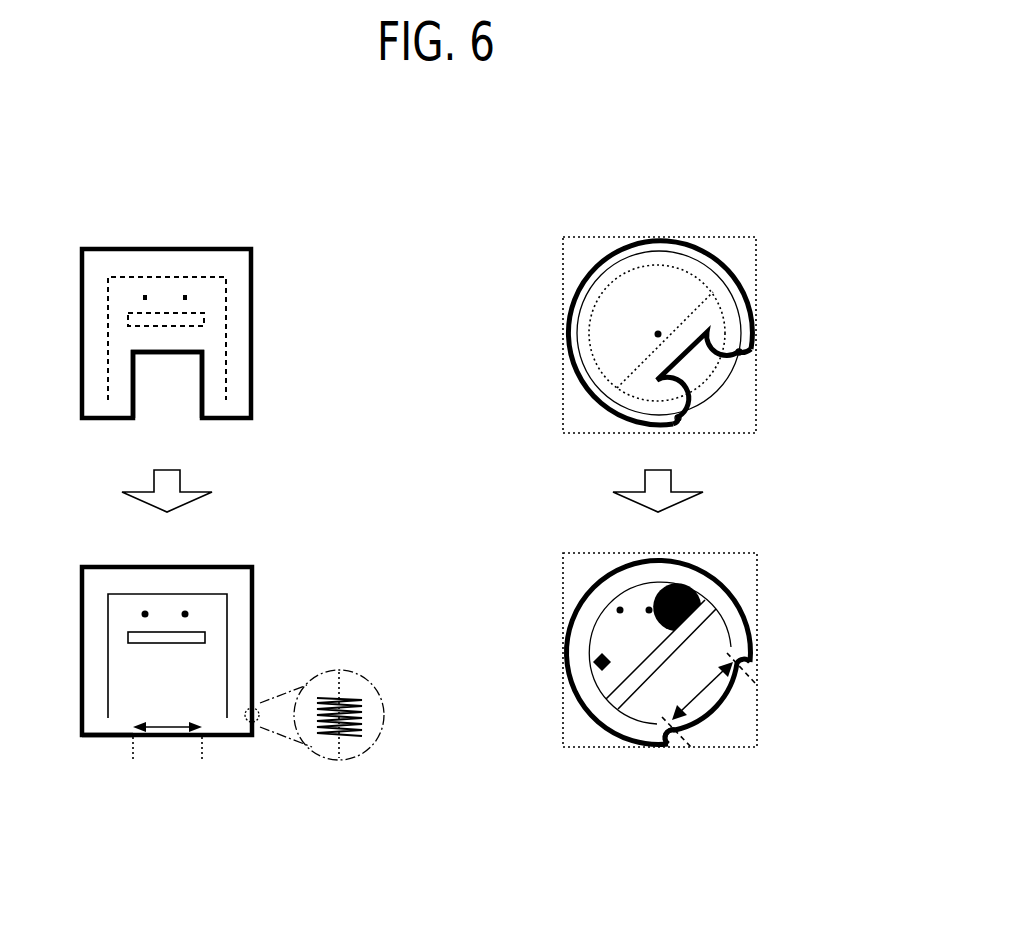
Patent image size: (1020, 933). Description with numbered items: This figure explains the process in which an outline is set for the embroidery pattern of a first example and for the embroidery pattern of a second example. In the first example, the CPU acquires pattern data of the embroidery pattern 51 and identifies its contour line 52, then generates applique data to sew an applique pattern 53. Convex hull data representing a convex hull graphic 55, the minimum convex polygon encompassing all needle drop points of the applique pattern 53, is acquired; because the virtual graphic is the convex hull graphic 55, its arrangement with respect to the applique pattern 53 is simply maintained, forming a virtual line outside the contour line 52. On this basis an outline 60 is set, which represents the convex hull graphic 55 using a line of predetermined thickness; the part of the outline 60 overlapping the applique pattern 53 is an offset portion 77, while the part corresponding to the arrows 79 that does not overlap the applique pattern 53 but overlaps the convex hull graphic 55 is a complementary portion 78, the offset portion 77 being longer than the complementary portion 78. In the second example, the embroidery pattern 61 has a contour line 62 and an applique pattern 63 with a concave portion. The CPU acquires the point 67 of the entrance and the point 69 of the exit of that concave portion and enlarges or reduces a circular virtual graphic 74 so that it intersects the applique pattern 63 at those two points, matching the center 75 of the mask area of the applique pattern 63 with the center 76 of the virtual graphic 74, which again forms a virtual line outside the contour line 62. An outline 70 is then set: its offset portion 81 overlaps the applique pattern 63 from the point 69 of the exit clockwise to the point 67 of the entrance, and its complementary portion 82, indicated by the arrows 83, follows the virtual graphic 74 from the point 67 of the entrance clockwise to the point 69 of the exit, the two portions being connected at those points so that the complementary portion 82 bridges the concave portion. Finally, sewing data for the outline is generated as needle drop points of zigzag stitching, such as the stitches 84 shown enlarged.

The embroidery pattern 51 is at (234, 698).
The contour line 52 is at (229, 329).
The applique pattern 53 is at (217, 247).
The convex hull graphic 55 is at (175, 422).
The outline 60 is at (254, 623).
The embroidery pattern 61 is at (726, 610).
The contour line 62 is at (665, 262).
The applique pattern 63 is at (715, 255).
The point of the entrance 67 is at (743, 353).
The point of the exit 69 is at (681, 421).
The outline 70 is at (709, 566).
The virtual graphic 74 is at (715, 399).
The center of the mask area 75 is at (571, 323).
The center of the virtual graphic 76 is at (656, 332).
The offset portion 77 is at (108, 737).
The complementary portion 78 is at (165, 737).
The arrows 79 is at (177, 730).
The offset portion 81 is at (637, 744).
The complementary portion 82 is at (721, 714).
The arrows 83 is at (740, 672).
The stitches 84 is at (359, 684).